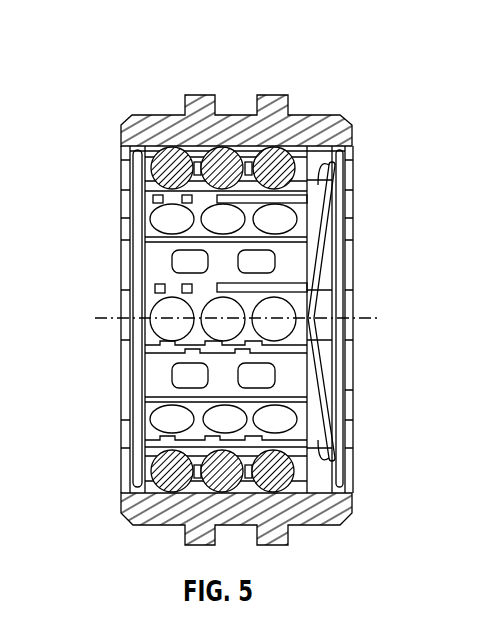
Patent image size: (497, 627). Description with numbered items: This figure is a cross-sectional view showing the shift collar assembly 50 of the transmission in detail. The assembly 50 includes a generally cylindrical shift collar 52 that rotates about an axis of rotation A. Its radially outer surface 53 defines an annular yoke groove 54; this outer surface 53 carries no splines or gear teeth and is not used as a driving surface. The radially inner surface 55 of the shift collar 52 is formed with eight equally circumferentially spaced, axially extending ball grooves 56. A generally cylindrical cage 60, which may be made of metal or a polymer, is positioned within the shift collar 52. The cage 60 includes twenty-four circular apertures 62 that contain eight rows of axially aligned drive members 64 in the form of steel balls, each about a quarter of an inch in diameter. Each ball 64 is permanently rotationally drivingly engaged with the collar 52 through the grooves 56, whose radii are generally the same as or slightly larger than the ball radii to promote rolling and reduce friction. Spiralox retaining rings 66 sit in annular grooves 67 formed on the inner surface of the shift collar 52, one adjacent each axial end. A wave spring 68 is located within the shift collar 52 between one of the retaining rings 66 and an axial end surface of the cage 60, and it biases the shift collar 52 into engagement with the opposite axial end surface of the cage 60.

The shift collar assembly 50 is at (377, 59).
The shift collar 52 is at (330, 130).
The radially outer surface 53 is at (152, 115).
The annular yoke groove 54 is at (236, 150).
The radially inner surface 55 is at (327, 366).
The ball grooves 56 is at (326, 300).
The cage 60 is at (143, 377).
The circular apertures 62 is at (144, 329).
The drive members 64 is at (240, 155).
The retaining rings 66 is at (339, 182).
The annular grooves 67 is at (121, 165).
The wave spring 68 is at (322, 254).
The axis of rotation A is at (376, 318).